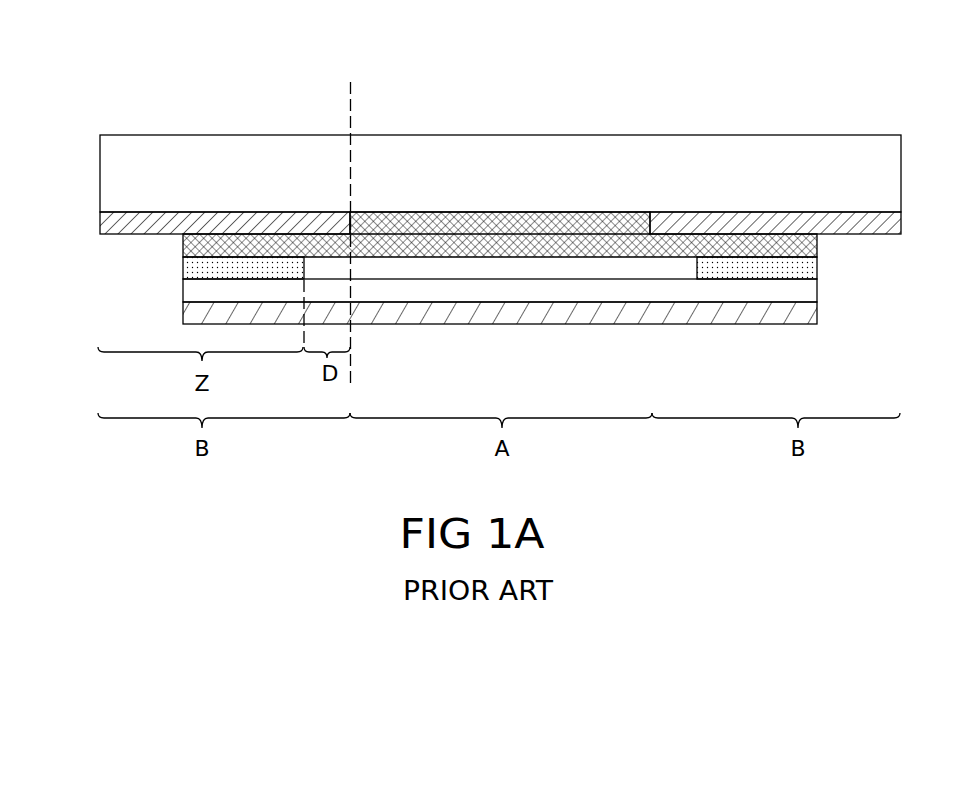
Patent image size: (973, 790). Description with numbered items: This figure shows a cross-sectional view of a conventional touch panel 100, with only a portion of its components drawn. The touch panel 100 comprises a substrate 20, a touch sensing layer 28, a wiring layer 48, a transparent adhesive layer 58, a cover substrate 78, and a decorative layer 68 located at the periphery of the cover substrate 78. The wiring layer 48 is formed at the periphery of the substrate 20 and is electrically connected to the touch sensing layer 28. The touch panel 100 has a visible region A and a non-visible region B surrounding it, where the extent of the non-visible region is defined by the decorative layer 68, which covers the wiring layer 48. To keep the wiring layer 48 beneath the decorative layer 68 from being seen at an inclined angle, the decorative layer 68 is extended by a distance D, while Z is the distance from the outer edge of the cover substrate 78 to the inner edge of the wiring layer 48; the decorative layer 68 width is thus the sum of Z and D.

The touch panel 100 is at (504, 182).
The cover substrate 78 is at (882, 175).
The decorative layer 68 is at (118, 214).
The transparent adhesive layer 58 is at (800, 244).
The wiring layer 48 is at (197, 266).
The touch sensing layer 28 is at (797, 288).
The substrate 20 is at (800, 310).